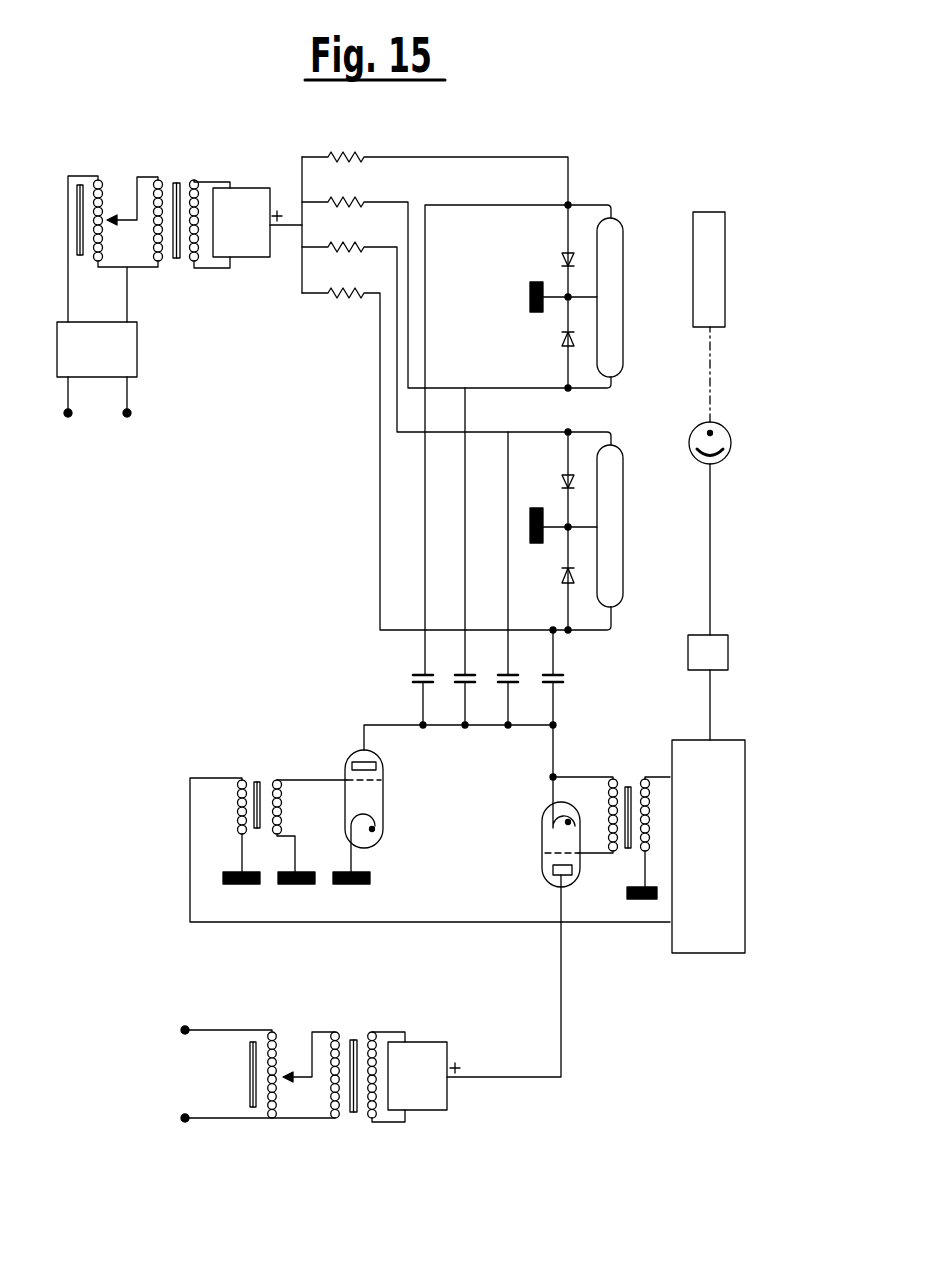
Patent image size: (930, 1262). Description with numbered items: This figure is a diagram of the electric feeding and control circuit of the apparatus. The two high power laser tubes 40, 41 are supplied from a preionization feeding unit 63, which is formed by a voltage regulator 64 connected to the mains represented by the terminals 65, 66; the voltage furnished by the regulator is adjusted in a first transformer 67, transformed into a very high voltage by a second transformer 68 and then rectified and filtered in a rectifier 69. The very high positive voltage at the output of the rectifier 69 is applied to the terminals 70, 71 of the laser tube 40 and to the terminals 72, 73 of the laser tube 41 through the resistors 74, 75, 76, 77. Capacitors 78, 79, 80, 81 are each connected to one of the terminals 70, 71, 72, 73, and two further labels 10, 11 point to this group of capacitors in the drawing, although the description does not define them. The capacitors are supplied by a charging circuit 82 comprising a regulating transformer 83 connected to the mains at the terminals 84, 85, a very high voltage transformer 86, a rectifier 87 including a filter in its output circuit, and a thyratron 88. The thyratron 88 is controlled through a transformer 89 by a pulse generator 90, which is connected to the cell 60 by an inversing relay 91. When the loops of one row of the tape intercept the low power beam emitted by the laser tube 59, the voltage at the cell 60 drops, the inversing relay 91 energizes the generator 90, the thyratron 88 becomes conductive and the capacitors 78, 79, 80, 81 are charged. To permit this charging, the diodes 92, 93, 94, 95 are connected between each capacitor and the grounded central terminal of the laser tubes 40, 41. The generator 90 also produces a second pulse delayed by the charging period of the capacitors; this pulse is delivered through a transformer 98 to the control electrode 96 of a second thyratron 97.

The capacitor 10 is at (410, 680).
The capacitor 11 is at (459, 671).
The high power laser tube 40 is at (614, 287).
The high power laser tube 41 is at (614, 517).
The laser tube 59 is at (712, 264).
The cell 60 is at (731, 443).
The preionization feeding unit 63 is at (149, 257).
The voltage regulator 64 is at (70, 357).
The terminal 65 is at (68, 416).
The terminal 66 is at (127, 416).
The first transformer 67 is at (98, 178).
The second transformer 68 is at (183, 178).
The rectifier 69 is at (258, 195).
The terminal 70 is at (612, 207).
The terminal 71 is at (612, 391).
The terminal 72 is at (614, 440).
The terminal 73 is at (612, 630).
The resistor 74 is at (346, 155).
The resistor 75 is at (346, 201).
The resistor 76 is at (346, 246).
The resistor 77 is at (346, 292).
The capacitor 78 is at (414, 686).
The capacitor 79 is at (460, 686).
The capacitor 80 is at (504, 686).
The capacitor 81 is at (546, 686).
The charging circuit 82 is at (402, 1074).
The regulating transformer 83 is at (255, 1040).
The terminal 84 is at (184, 1027).
The terminal 85 is at (183, 1122).
The very high voltage transformer 86 is at (353, 1040).
The rectifier 87 is at (422, 1050).
The thyratron 88 is at (543, 860).
The transformer 89 is at (627, 787).
The pulse generator 90 is at (728, 930).
The inversing relay 91 is at (728, 655).
The diode 92 is at (560, 254).
The diode 93 is at (560, 346).
The diode 94 is at (561, 476).
The diode 95 is at (560, 585).
The control electrode 96 is at (350, 784).
The second thyratron 97 is at (370, 804).
The transformer 98 is at (257, 778).